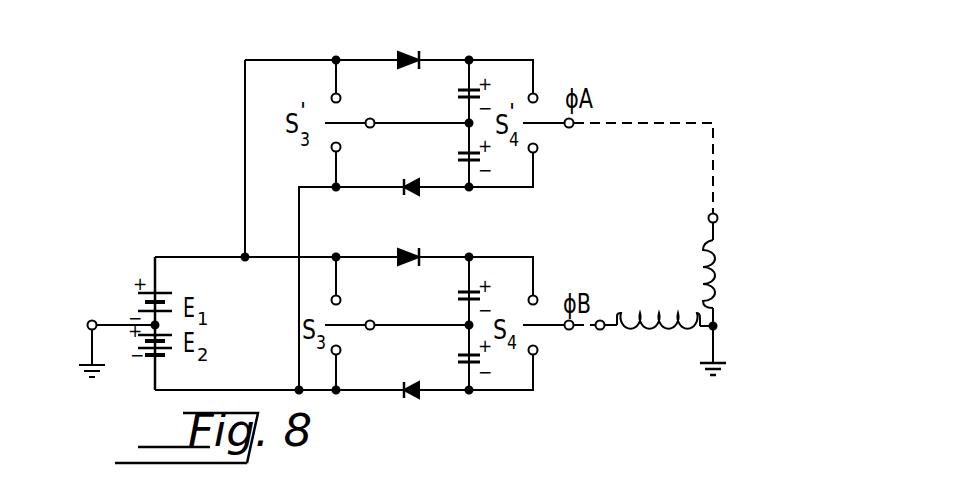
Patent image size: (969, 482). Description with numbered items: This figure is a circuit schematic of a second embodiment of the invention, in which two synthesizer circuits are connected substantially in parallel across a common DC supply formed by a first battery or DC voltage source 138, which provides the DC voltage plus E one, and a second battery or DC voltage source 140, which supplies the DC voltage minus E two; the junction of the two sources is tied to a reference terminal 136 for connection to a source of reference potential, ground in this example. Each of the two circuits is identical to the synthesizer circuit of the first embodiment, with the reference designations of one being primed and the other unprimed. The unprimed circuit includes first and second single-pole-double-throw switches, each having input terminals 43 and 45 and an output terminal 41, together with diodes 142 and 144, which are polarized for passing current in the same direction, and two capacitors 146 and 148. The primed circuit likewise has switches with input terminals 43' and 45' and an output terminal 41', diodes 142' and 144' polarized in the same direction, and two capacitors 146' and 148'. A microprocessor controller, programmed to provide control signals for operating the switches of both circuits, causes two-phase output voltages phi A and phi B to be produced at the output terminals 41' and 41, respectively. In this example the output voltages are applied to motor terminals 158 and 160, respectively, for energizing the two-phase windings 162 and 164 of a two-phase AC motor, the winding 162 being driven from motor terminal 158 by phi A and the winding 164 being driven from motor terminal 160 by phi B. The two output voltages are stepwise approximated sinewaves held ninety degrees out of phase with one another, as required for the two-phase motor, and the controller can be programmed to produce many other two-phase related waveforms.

The reference terminal 136 is at (89, 322).
The first battery or DC voltage source 138 is at (136, 297).
The second battery or DC voltage source 140 is at (135, 352).
The diode 142' is at (418, 34).
The diode 142 is at (434, 242).
The diode 144' is at (383, 206).
The diode 144 is at (438, 405).
The capacitor 146' is at (441, 98).
The capacitor 148' is at (441, 150).
The capacitor 146 is at (444, 298).
The capacitor 148 is at (444, 347).
The motor terminal 158 is at (717, 216).
The motor terminal 160 is at (603, 321).
The two-phase winding 162 is at (726, 270).
The two-phase winding 164 is at (652, 338).
The input terminal 45' is at (431, 73).
The output terminal 41' is at (483, 120).
The input terminal 43' is at (456, 172).
The input terminal 45 is at (450, 275).
The output terminal 41 is at (483, 330).
The input terminal 43 is at (452, 382).